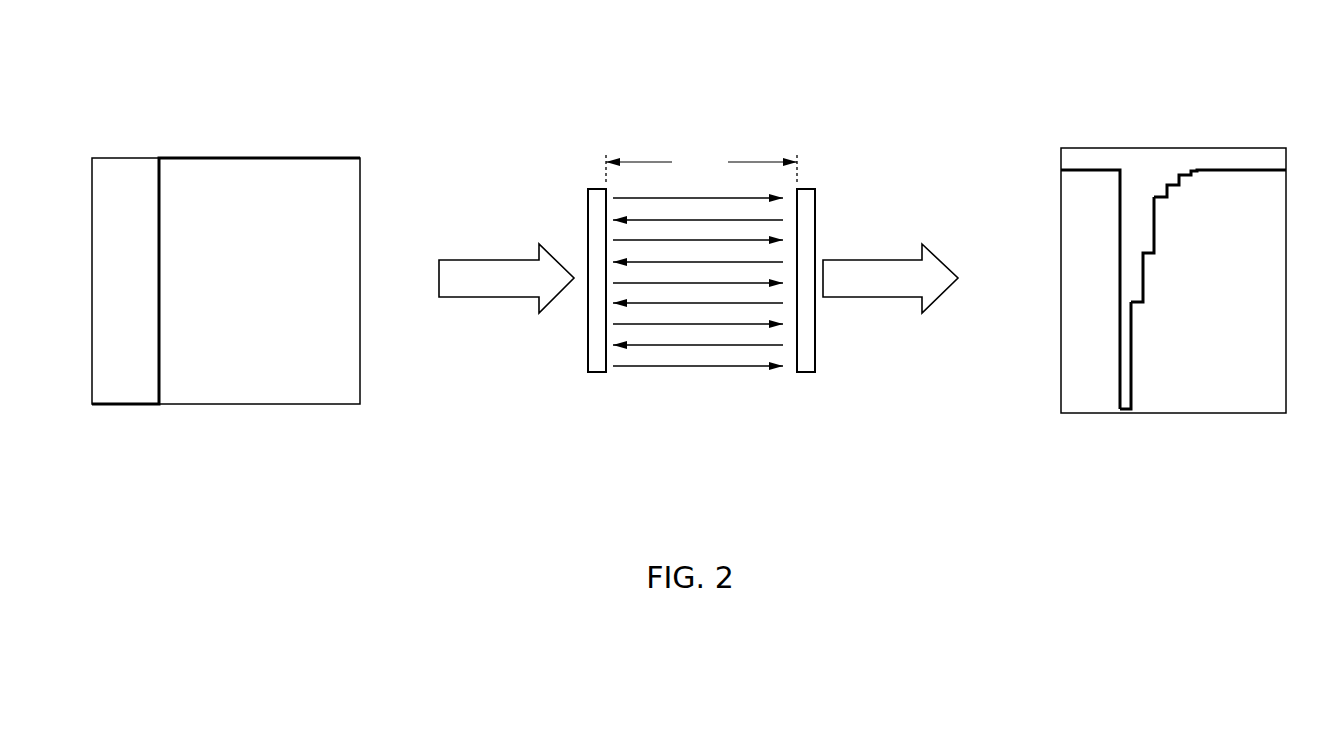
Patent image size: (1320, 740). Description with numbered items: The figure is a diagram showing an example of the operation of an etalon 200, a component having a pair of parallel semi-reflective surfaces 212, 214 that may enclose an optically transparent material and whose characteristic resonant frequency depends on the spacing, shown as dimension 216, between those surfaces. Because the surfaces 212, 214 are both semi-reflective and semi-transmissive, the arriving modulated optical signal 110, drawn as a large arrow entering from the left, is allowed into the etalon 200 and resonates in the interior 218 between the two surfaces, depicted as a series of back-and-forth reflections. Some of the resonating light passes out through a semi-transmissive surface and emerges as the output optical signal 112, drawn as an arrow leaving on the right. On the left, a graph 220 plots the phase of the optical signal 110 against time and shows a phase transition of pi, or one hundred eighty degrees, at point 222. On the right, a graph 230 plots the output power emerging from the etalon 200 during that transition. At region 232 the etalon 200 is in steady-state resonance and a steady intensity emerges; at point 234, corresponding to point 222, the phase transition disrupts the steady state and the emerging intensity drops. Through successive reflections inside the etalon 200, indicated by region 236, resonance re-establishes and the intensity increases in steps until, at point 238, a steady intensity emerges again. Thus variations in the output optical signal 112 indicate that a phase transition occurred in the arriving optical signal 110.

The etalon 200 is at (766, 64).
The arriving modulated optical signal 110 is at (485, 258).
The output optical signal 112 is at (865, 258).
The semi-reflective surface 212 is at (575, 218).
The semi-reflective surface 214 is at (830, 218).
The dimension 216 is at (701, 166).
The interior 218 is at (704, 392).
The graph 220 is at (272, 105).
The point 222 is at (153, 138).
The graph 230 is at (1158, 90).
The region 232 is at (1082, 160).
The point 234 is at (1126, 190).
The region 236 is at (1148, 285).
The point 238 is at (1240, 172).